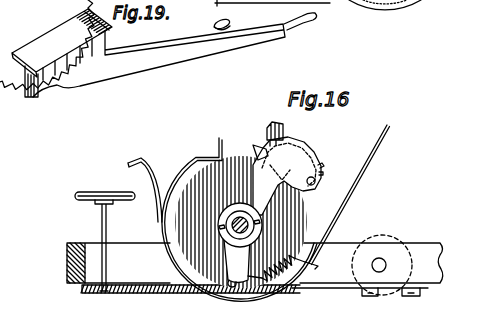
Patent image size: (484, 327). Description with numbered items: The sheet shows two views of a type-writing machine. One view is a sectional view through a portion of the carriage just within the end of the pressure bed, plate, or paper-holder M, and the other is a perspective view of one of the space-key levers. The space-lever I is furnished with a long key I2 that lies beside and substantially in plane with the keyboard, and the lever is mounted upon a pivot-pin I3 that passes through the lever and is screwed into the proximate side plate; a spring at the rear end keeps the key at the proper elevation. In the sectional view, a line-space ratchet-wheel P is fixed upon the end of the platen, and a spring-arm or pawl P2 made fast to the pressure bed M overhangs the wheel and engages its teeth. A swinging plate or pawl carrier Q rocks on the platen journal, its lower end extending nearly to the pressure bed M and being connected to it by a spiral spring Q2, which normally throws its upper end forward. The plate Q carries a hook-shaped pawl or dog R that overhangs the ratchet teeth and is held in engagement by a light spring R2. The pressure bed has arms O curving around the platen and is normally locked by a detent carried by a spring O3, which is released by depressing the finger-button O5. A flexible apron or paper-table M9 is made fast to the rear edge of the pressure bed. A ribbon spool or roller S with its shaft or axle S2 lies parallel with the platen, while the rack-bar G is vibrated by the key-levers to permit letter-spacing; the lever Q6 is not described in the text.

In FIG. 19, the space-lever I is at (175, 55).
In FIG. 19, the long key I2 is at (62, 53).
In FIG. 19, the pivot-pin I3 is at (229, 22).
In FIG. 19, the arm of pressure-bed O is at (222, 39).
In FIG. 19, the spring O3 is at (447, 6).
In FIG. 16, the finger-button O5 is at (105, 234).
In FIG. 16, the curved arm Q6 is at (145, 188).
In FIG. 16, the line-space ratchet-wheel P is at (153, 150).
In FIG. 16, the spring-arm or pawl P2 is at (196, 157).
In FIG. 16, the swinging plate or pawl carrier Q is at (271, 210).
In FIG. 16, the rack-bar G is at (233, 286).
In FIG. 16, the hook-shaped pawl or dog R is at (253, 147).
In FIG. 16, the light spring R2 is at (267, 132).
In FIG. 16, the spiral spring Q2 is at (284, 279).
In FIG. 16, the flexible apron or paper-table M9 is at (351, 197).
In FIG. 16, the pressure bed, plate, or paper-holder M is at (236, 297).
In FIG. 16, the ribbon spool or roller S is at (392, 242).
In FIG. 16, the shaft or axle S2 is at (386, 263).